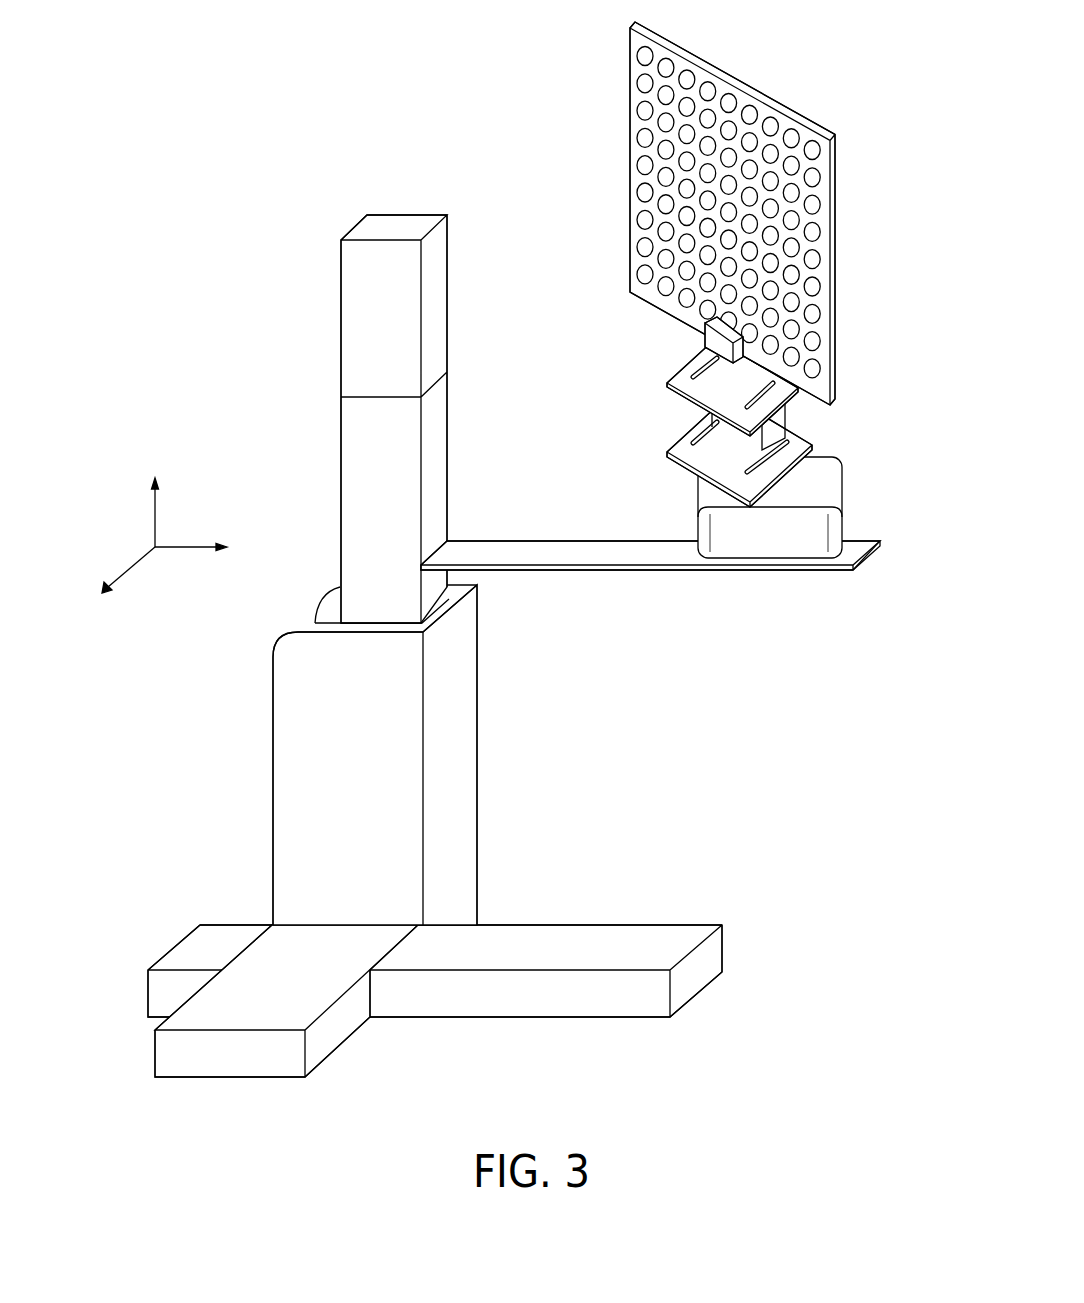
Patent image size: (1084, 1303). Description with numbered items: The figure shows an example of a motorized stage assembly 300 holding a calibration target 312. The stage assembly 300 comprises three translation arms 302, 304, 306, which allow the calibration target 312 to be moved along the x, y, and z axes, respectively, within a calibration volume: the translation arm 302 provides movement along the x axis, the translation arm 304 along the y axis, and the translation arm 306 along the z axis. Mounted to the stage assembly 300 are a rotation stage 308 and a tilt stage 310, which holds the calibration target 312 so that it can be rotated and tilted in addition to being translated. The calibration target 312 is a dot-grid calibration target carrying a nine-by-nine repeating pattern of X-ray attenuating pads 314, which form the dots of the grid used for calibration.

The stage assembly 300 is at (363, 193).
The translation arm 302 is at (522, 1018).
The translation arm 304 is at (222, 1077).
The translation arm 306 is at (341, 450).
The rotation stage 308 is at (842, 508).
The tilt stage 310 is at (668, 385).
The calibration target 312 is at (733, 79).
The X-ray attenuating pads 314 is at (638, 141).